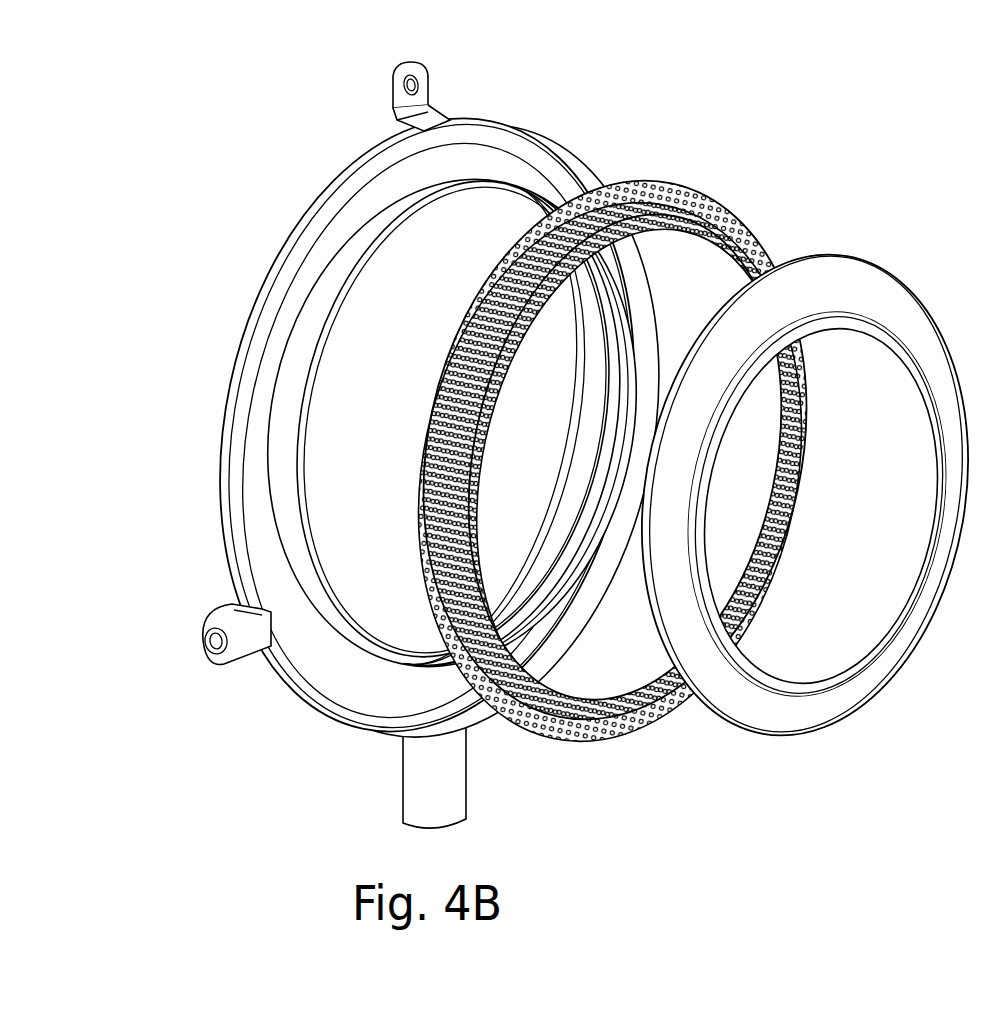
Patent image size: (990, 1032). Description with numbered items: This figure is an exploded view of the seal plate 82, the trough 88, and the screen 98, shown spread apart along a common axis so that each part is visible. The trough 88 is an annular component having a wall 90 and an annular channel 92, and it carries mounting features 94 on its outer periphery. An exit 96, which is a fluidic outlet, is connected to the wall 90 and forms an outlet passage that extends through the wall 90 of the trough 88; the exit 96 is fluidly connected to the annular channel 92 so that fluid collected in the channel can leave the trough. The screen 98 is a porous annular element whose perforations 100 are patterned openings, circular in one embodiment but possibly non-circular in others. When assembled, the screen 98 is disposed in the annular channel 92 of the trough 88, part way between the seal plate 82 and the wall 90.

The seal plate 82 is at (885, 270).
The trough 88 is at (439, 438).
The wall 90 is at (276, 238).
The annular channel 92 is at (540, 207).
The mounting features 94 is at (432, 76).
The exit 96 is at (403, 783).
The screen 98 is at (612, 430).
The perforations 100 is at (707, 187).